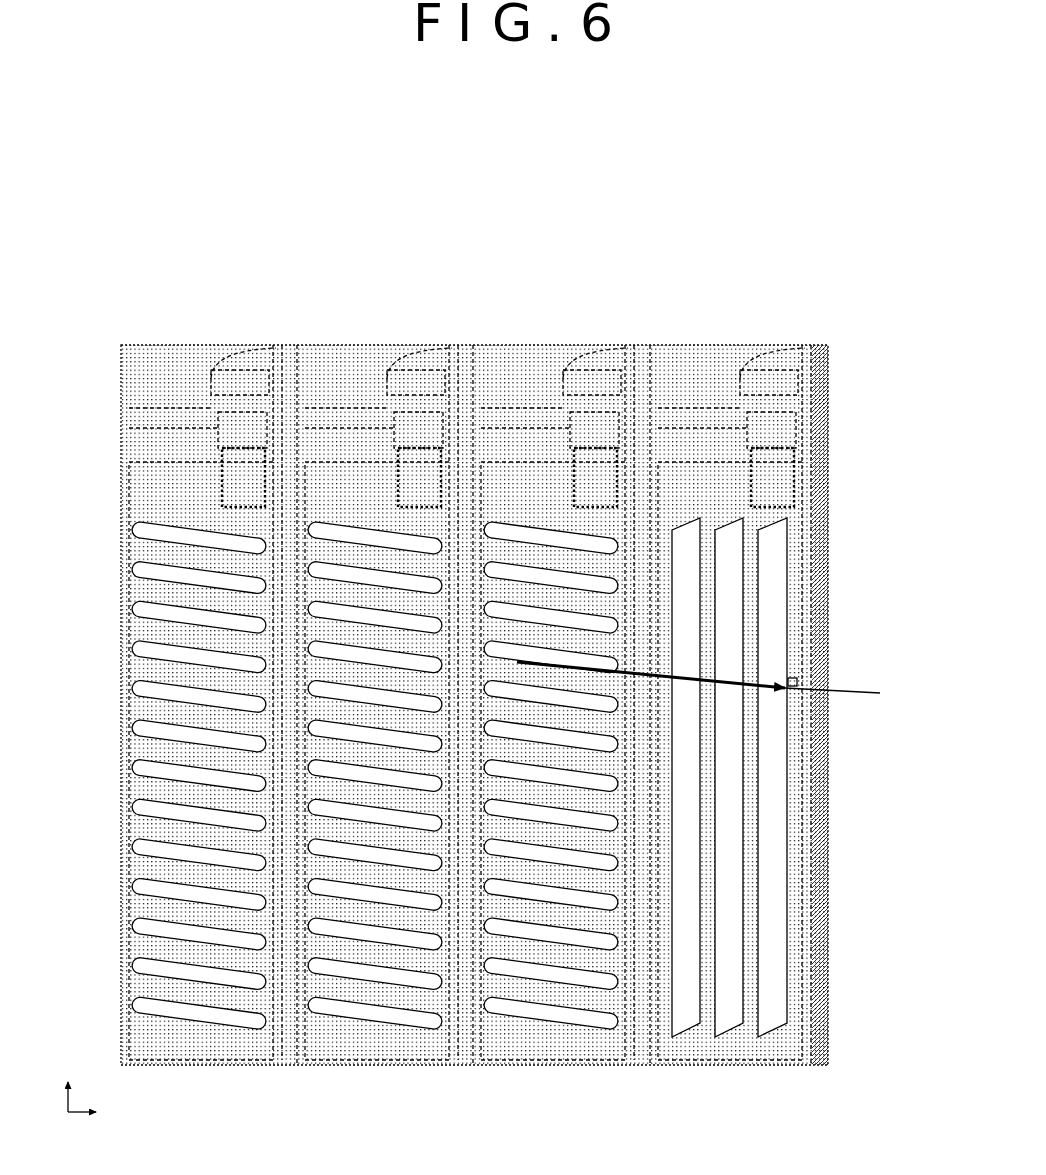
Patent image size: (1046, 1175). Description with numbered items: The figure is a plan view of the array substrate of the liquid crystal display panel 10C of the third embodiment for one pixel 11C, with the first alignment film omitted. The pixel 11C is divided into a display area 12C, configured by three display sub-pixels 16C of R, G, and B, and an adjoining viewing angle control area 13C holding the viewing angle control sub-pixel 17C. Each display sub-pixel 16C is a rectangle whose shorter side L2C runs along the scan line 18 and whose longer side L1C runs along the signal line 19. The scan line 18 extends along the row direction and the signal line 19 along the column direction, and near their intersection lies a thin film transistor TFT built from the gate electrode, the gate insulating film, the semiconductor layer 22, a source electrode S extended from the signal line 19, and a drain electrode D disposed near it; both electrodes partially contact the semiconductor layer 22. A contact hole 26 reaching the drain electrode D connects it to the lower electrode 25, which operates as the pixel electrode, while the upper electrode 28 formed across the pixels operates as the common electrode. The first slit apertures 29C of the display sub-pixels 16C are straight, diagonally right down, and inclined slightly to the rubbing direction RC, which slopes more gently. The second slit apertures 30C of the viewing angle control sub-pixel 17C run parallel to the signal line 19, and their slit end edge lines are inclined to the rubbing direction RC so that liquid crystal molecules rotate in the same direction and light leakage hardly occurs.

The liquid crystal display panel 10C is at (165, 107).
The pixel 11C is at (825, 160).
The display area 12C is at (650, 218).
The viewing angle control area 13C is at (825, 218).
The display sub-pixel 16C is at (650, 276).
The viewing angle control sub-pixel 17C is at (825, 276).
The scan line 18 is at (160, 418).
The signal line 19 is at (820, 537).
The semiconductor layer 22 is at (777, 402).
The lower electrode 25 is at (125, 992).
The contact hole 26 is at (782, 477).
The upper electrode 28 is at (148, 492).
The first slit aperture 29C is at (155, 925).
The second slit aperture 30C is at (775, 955).
The source electrode S is at (777, 383).
The drain electrode D is at (782, 423).
The thin film transistor TFT is at (893, 340).
The direction of the rubbing treatment RC is at (698, 670).
The longer side length L1C is at (341, 277).
The shorter side length L2C is at (380, 316).